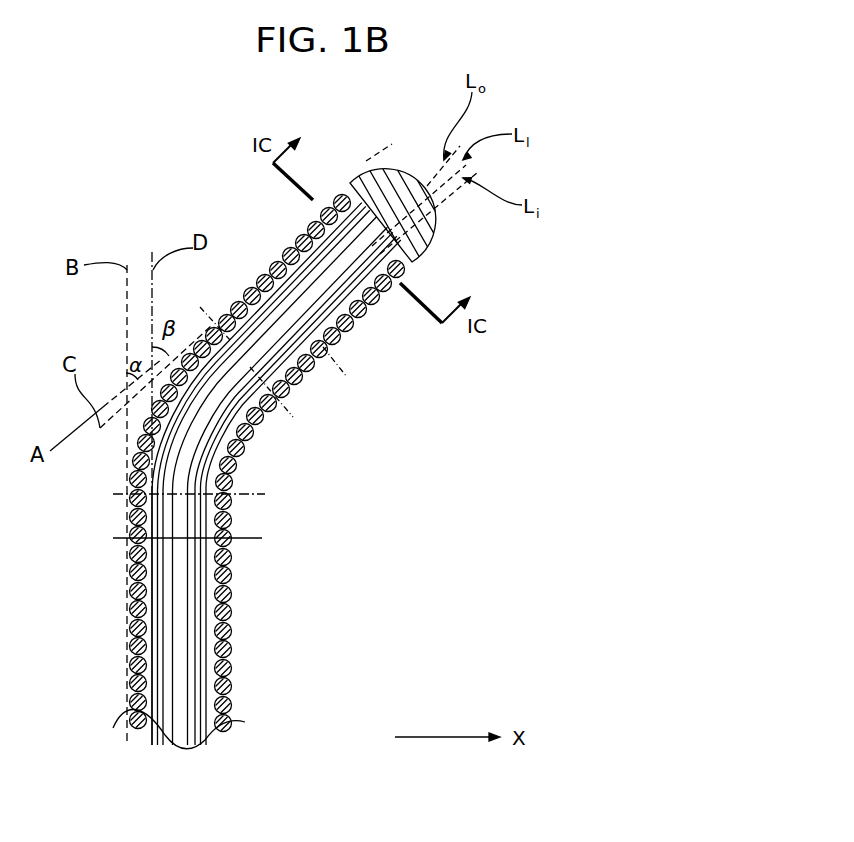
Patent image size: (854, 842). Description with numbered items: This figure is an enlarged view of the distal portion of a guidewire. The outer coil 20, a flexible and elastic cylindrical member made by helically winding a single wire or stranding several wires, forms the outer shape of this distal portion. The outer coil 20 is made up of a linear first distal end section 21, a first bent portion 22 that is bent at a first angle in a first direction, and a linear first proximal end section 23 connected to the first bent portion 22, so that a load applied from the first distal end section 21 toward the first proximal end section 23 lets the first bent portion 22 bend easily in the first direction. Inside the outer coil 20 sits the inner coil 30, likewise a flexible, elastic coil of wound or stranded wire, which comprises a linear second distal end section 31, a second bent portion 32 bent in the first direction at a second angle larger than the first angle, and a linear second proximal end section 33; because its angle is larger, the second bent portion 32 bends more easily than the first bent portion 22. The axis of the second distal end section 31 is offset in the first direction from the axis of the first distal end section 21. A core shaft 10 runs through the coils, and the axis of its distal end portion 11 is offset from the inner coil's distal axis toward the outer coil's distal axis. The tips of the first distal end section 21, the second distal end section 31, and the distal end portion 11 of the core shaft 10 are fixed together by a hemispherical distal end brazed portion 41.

The core shaft 10 is at (178, 688).
The distal end portion of the core shaft 11 is at (287, 486).
The outer coil 20 is at (233, 603).
The first distal end section 21 is at (367, 331).
The first bent portion 22 is at (259, 449).
The first proximal end section 23 is at (235, 641).
The inner coil 30 is at (152, 563).
The second distal end section 31 is at (310, 236).
The second bent portion 32 is at (155, 433).
The second proximal end section 33 is at (136, 620).
The distal end brazed portion 41 is at (422, 233).